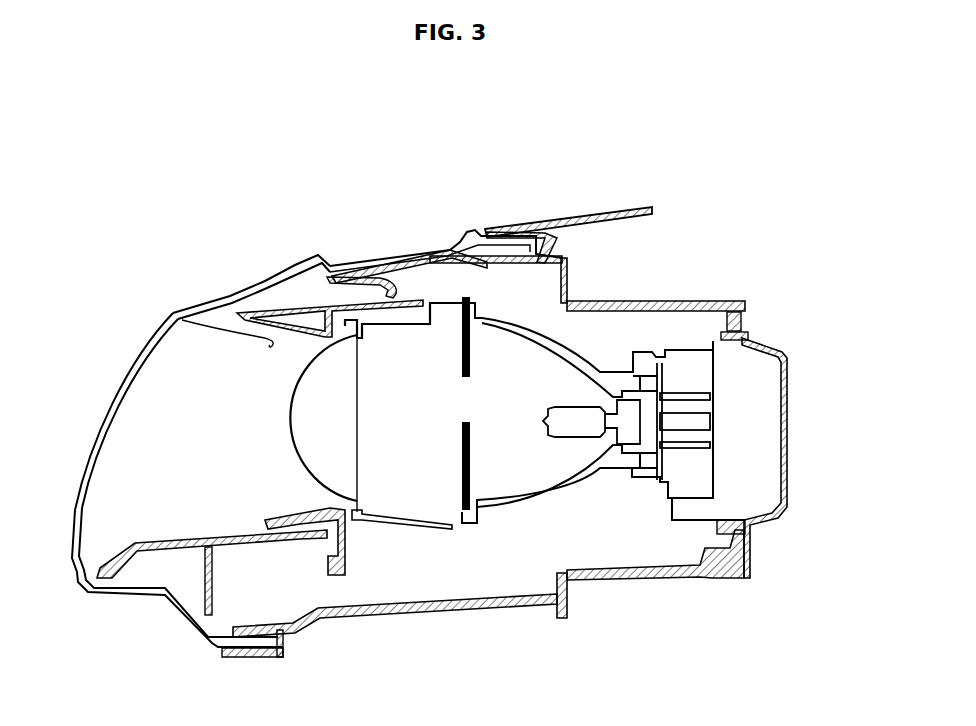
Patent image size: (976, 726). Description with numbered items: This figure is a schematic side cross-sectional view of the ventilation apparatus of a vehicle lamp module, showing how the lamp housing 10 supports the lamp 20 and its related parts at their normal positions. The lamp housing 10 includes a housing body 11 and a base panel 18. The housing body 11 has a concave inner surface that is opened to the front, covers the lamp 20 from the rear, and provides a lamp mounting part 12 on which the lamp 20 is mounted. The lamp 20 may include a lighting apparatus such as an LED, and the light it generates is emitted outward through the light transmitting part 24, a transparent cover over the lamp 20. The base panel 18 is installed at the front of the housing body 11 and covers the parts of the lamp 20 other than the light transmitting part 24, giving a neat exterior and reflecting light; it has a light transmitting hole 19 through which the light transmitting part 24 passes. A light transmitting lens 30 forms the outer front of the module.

The lamp housing 10 is at (515, 107).
The housing body 11 is at (573, 212).
The lamp mounting part 12 is at (785, 382).
The base panel 18 is at (328, 272).
The light transmitting hole 19 is at (182, 320).
The lamp 20 is at (600, 348).
The light transmitting part 24 is at (315, 447).
The light transmitting lens 30 is at (116, 402).